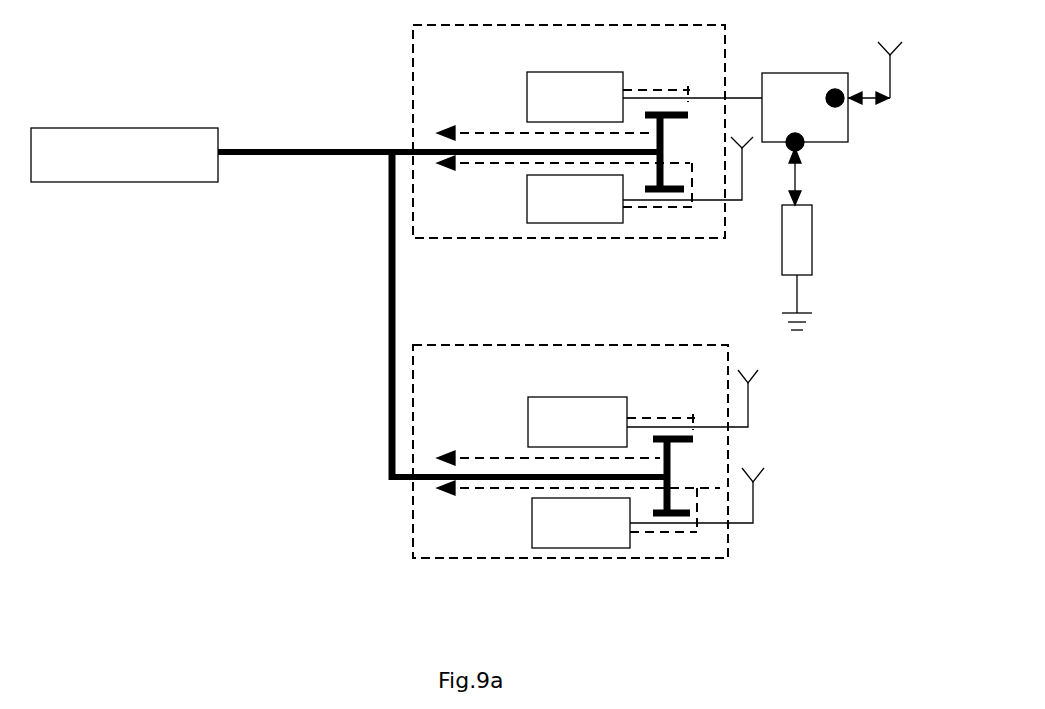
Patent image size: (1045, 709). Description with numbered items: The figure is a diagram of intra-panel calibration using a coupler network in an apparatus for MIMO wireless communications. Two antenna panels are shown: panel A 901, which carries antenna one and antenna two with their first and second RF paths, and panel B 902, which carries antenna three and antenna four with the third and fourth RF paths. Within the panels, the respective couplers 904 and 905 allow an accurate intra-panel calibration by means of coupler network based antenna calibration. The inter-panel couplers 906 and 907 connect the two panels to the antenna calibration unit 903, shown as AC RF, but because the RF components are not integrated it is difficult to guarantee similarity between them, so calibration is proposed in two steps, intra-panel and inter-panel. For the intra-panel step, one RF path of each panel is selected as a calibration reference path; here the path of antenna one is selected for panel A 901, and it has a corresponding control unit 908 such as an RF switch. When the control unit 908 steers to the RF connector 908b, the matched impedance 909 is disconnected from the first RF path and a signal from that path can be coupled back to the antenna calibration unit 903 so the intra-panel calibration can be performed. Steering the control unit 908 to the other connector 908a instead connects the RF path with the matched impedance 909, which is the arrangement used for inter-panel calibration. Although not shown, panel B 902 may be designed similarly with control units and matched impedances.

The panel A 901 is at (479, 65).
The panel B 902 is at (479, 385).
The antenna calibration unit 903 is at (95, 169).
The coupler 904 is at (678, 152).
The coupler 905 is at (684, 476).
The inter-panel coupler 906 is at (396, 131).
The inter-panel coupler 907 is at (381, 305).
The control unit 908 is at (824, 55).
The connector 908a is at (888, 195).
The RF connector 908b is at (943, 158).
The matched impedance 909 is at (866, 261).